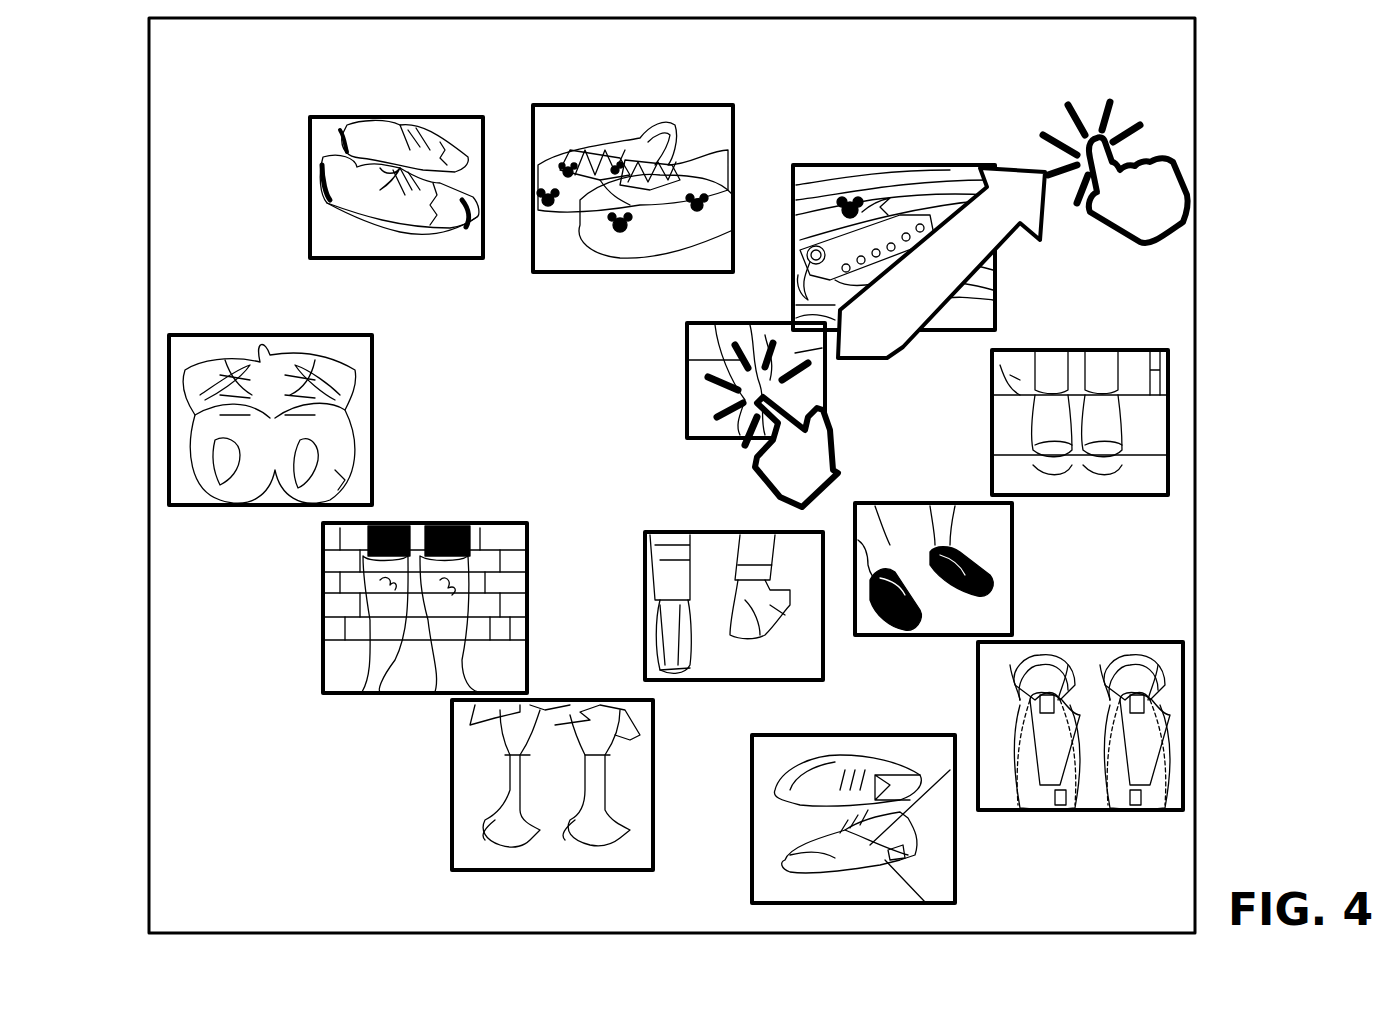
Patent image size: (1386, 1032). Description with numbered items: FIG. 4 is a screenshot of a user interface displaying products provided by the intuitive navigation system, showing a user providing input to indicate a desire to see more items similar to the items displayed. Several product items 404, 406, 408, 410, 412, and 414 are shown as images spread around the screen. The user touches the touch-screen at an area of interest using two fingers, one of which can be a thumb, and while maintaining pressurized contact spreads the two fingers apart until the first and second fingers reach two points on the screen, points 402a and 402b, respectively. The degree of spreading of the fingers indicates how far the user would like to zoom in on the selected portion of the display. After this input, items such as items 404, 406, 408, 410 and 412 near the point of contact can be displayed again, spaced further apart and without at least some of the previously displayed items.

The first point 402a is at (840, 462).
The second point 402b is at (1153, 247).
The item 404 is at (687, 355).
The item 406 is at (562, 272).
The item 408 is at (870, 165).
The item 410 is at (1053, 497).
The item 412 is at (1013, 578).
The item image 414 is at (823, 672).